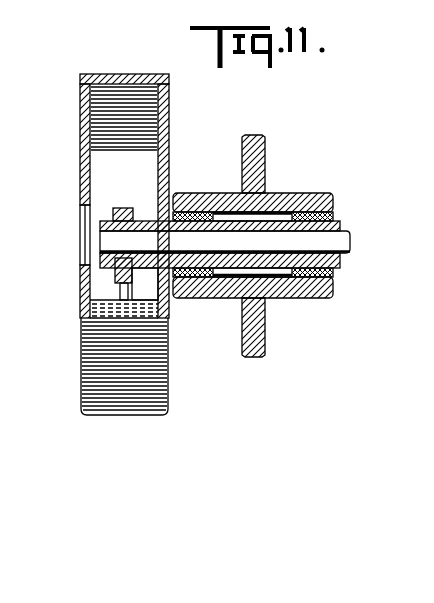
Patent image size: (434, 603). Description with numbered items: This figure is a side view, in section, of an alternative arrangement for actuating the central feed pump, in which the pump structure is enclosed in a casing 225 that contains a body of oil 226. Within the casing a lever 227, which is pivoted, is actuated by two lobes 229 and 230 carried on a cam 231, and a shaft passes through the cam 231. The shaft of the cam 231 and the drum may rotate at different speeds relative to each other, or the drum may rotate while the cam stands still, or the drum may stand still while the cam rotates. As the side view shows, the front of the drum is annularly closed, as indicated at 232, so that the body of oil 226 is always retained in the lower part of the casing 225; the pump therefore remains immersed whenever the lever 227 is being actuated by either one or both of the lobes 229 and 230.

The casing 225 is at (85, 390).
The body of oil 226 is at (98, 314).
The lever 227 is at (119, 292).
The lobe 229 is at (114, 271).
The lobe 230 is at (123, 208).
The cam 231 is at (100, 222).
The annular closure of the drum front 232 is at (82, 120).